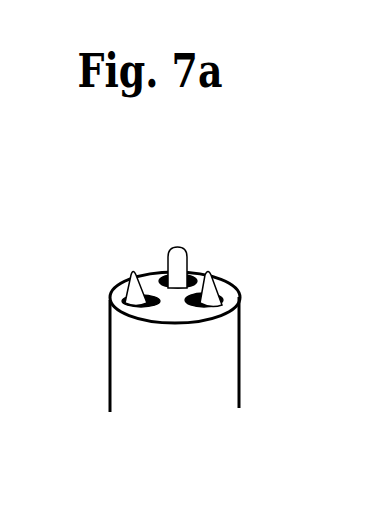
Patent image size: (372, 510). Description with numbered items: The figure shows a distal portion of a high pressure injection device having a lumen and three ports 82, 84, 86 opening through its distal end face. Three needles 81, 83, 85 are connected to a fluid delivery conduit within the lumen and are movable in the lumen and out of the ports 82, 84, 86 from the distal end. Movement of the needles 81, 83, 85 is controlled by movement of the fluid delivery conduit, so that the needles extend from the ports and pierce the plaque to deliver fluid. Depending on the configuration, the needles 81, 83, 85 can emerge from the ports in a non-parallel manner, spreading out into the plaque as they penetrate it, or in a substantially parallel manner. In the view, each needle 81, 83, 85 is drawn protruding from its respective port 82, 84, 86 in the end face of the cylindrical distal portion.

The needle 81 is at (130, 299).
The port 82 is at (112, 307).
The needle 83 is at (218, 296).
The port 84 is at (238, 307).
The needle 85 is at (170, 263).
The port 86 is at (195, 270).